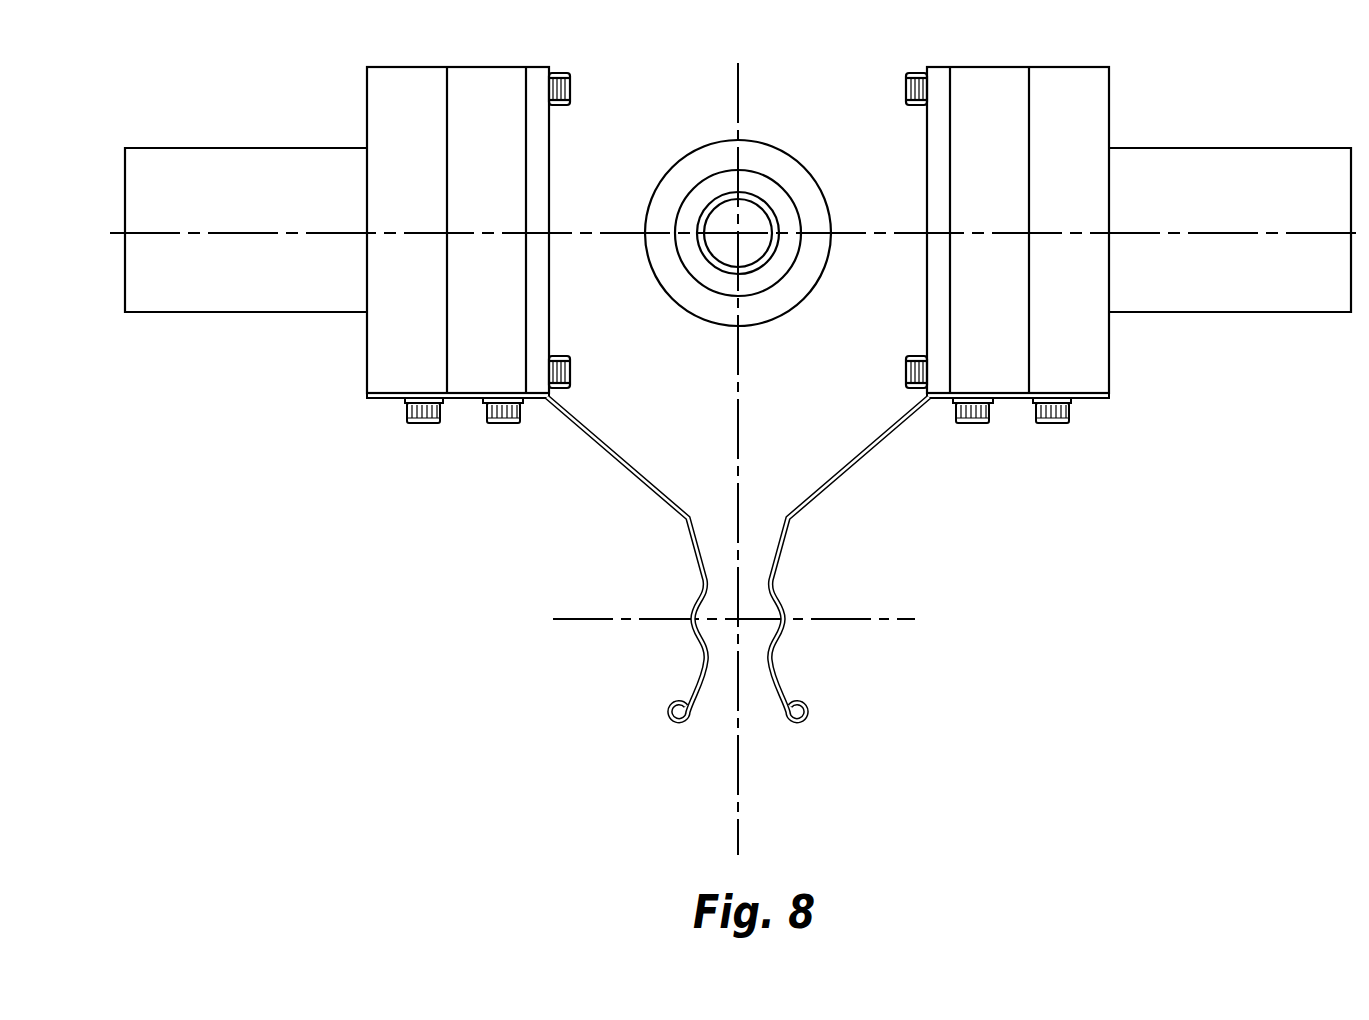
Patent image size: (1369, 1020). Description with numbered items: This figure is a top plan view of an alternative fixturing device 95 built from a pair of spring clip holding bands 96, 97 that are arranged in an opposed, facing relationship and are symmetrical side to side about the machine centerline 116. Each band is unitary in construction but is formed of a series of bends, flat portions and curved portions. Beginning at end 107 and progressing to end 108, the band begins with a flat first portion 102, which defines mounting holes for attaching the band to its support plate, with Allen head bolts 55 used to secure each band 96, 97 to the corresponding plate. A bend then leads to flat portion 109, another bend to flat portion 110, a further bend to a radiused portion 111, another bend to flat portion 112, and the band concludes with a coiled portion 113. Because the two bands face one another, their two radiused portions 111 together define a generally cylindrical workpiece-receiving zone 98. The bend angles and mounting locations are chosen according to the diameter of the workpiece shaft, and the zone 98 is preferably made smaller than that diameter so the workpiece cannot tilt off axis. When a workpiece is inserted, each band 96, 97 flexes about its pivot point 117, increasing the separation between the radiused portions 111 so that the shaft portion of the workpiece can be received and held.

The Allen head bolts 55 is at (433, 423).
The fixturing device 95 is at (648, 642).
The spring clip holding band 96 is at (612, 456).
The spring clip holding band 97 is at (878, 446).
The workpiece-receiving area or zone 98 is at (760, 606).
The first portion 102 is at (383, 399).
The end 107 is at (365, 397).
The end 108 is at (686, 700).
The flat portion 109 is at (633, 463).
The flat portion 110 is at (695, 553).
The radiused portion 111 is at (688, 613).
The flat portion 112 is at (772, 693).
The coiled portion 113 is at (804, 724).
The machine centerline 116 is at (737, 98).
The pivot point 117 is at (546, 401).